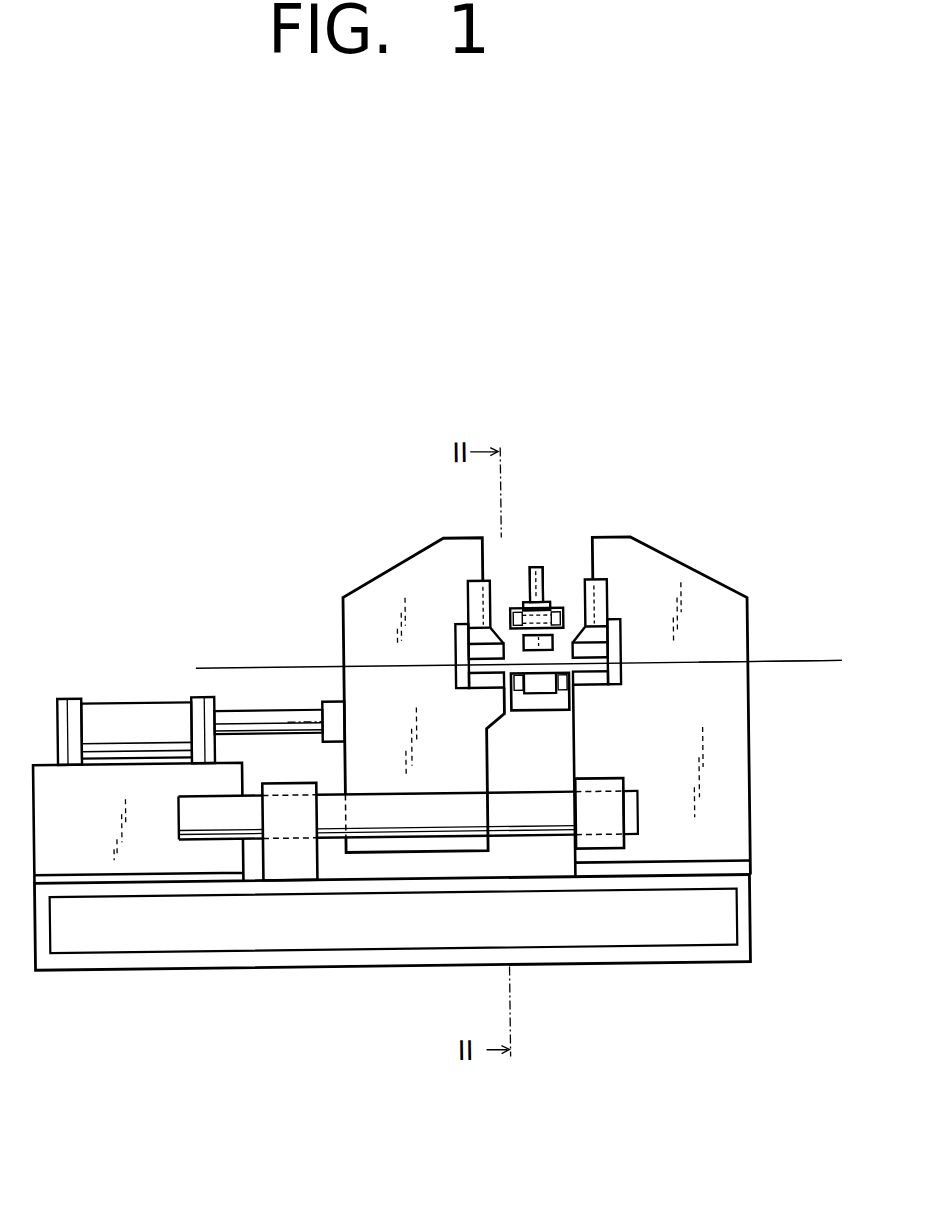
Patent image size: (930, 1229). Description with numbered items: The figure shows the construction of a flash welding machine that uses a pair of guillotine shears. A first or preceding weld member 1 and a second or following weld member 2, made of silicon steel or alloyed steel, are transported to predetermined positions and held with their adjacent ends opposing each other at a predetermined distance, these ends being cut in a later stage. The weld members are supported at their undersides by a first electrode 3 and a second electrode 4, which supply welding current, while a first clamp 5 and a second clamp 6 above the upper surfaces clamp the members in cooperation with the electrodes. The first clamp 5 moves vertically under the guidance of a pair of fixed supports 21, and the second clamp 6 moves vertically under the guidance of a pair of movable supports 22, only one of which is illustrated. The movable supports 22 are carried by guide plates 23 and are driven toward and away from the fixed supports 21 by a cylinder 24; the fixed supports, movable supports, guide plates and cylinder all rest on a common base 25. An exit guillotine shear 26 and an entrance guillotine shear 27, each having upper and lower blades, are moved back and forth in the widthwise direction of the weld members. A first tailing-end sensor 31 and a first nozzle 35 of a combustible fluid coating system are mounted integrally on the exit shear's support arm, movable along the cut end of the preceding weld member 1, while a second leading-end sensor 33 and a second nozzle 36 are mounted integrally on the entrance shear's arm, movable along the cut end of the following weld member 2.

The first weld member 1 is at (813, 662).
The second weld member 2 is at (262, 659).
The first electrode 3 is at (623, 688).
The second electrode 4 is at (485, 679).
The first clamp 5 is at (603, 649).
The second clamp 6 is at (476, 648).
The fixed supports 21 is at (743, 794).
The movable supports 22 is at (441, 553).
The guide plates 23 is at (546, 821).
The cylinder 24 is at (128, 699).
The common base 25 is at (322, 931).
The exit guillotine shear 26 is at (560, 641).
The entrance guillotine shear 27 is at (527, 641).
The first tailing-end sensor 31 is at (564, 628).
The second leading-end sensor 33 is at (527, 607).
The first nozzle 35 is at (564, 628).
The second nozzle 36 is at (527, 607).